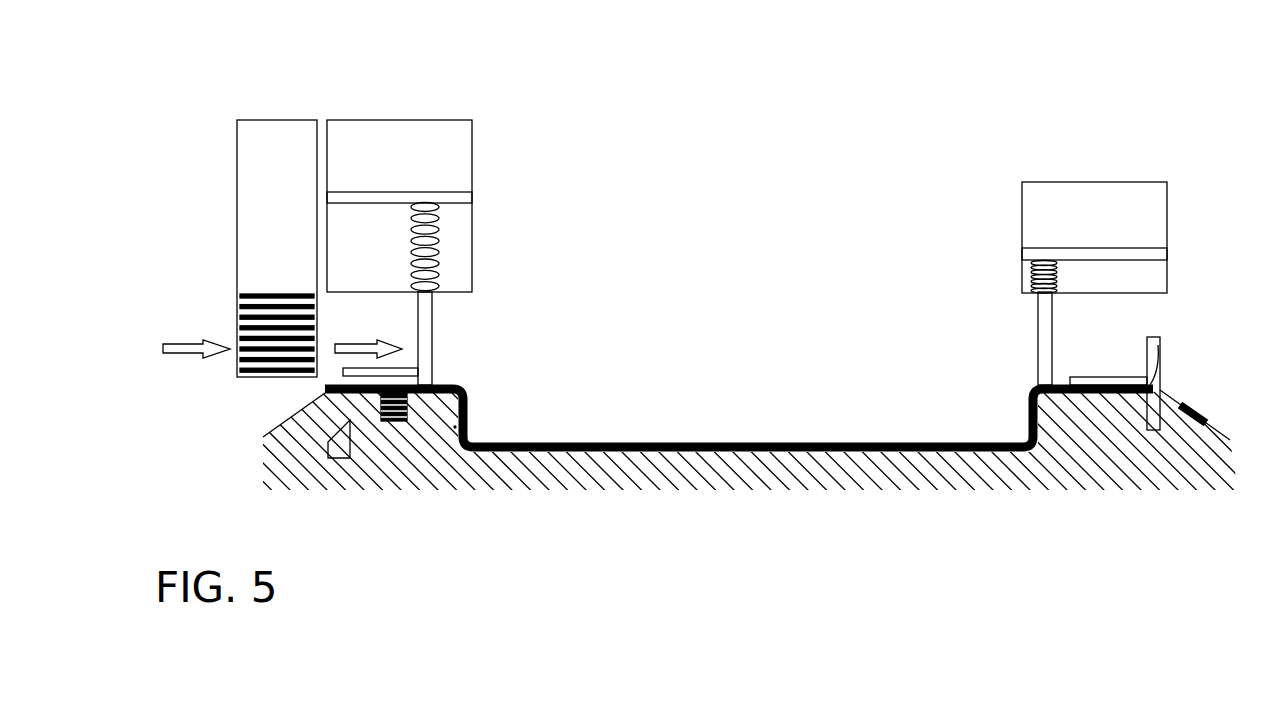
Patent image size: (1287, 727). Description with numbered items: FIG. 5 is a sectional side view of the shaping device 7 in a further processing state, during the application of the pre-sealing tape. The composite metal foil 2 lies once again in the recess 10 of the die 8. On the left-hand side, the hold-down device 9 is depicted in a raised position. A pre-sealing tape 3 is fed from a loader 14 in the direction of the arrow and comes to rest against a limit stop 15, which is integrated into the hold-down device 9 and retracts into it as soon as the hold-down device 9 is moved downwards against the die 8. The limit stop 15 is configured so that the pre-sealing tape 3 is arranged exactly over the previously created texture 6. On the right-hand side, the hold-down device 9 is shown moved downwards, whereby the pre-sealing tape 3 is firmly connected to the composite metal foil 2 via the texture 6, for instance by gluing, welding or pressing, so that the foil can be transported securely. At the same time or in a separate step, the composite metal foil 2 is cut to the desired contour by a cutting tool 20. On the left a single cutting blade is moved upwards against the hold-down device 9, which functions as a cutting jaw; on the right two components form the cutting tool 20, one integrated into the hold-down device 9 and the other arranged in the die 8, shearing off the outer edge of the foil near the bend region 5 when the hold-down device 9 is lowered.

The composite metal foil 2 is at (462, 419).
The pre-sealing tape 3 is at (355, 371).
The corner / bend region 5 is at (455, 427).
The texture 6 is at (362, 386).
The shaping device 7 is at (1112, 108).
The die 8 is at (1160, 462).
The hold-down device 9 is at (405, 130).
The recess 10 is at (1032, 443).
The loader 14 is at (254, 243).
The limit stop 15 is at (425, 333).
The cutting tool 20 is at (337, 447).